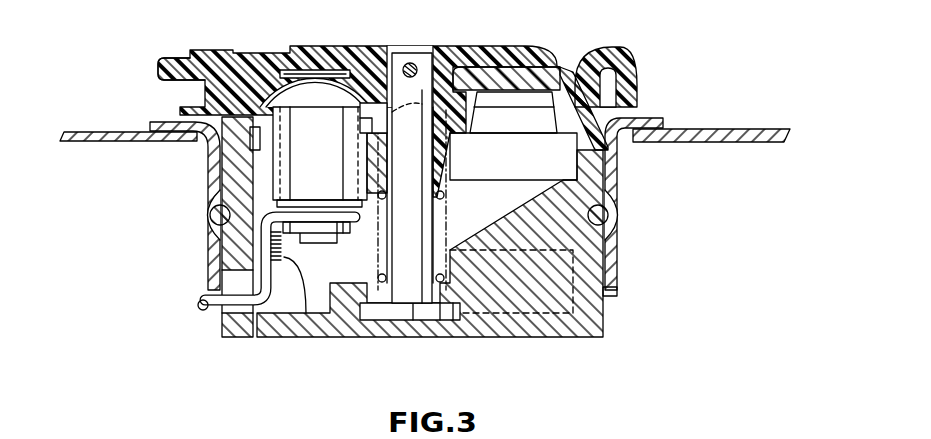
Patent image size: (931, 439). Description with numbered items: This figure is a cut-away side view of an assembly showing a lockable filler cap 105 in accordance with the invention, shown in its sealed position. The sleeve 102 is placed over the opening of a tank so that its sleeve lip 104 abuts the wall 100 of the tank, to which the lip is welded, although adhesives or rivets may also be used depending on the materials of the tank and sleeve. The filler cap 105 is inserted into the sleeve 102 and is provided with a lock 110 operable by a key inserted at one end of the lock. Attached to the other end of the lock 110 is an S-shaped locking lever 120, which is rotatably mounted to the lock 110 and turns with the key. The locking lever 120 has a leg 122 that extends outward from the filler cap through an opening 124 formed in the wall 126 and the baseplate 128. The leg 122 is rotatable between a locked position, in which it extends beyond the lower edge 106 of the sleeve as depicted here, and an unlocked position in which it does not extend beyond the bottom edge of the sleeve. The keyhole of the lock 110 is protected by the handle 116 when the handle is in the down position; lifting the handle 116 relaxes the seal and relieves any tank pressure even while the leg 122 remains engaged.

The tank wall 100 is at (735, 125).
The sleeve 102 is at (620, 260).
The sleeve lip 104 is at (668, 118).
The filler cap 105 is at (538, 43).
The lower edge of the sleeve 106 is at (202, 290).
The lock 110 is at (303, 132).
The handle 116 is at (190, 66).
The locking lever 120 is at (287, 262).
The leg 122 is at (203, 308).
The opening 124 is at (244, 327).
The wall 126 is at (612, 305).
The baseplate 128 is at (548, 333).